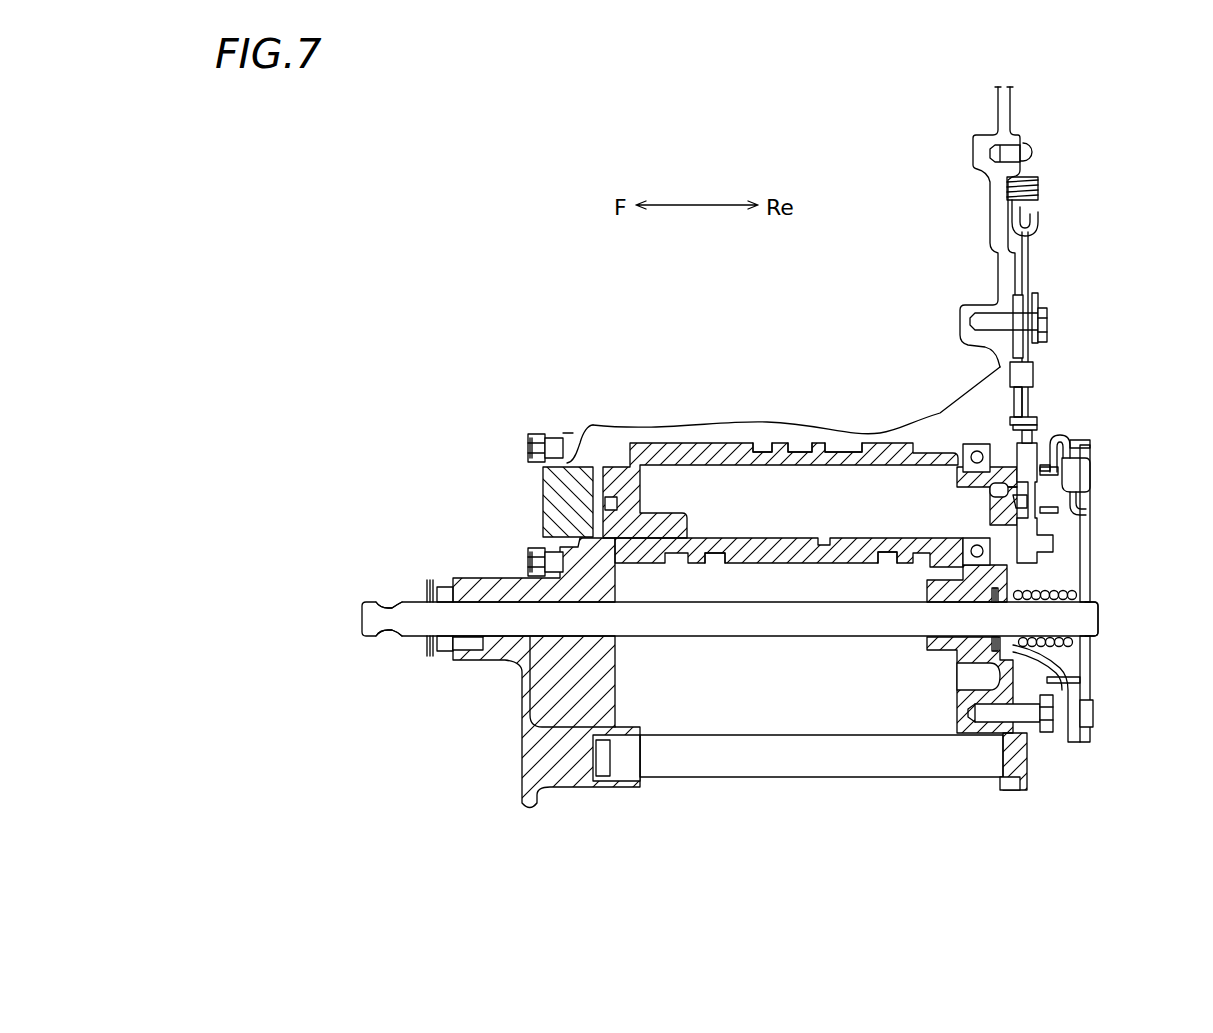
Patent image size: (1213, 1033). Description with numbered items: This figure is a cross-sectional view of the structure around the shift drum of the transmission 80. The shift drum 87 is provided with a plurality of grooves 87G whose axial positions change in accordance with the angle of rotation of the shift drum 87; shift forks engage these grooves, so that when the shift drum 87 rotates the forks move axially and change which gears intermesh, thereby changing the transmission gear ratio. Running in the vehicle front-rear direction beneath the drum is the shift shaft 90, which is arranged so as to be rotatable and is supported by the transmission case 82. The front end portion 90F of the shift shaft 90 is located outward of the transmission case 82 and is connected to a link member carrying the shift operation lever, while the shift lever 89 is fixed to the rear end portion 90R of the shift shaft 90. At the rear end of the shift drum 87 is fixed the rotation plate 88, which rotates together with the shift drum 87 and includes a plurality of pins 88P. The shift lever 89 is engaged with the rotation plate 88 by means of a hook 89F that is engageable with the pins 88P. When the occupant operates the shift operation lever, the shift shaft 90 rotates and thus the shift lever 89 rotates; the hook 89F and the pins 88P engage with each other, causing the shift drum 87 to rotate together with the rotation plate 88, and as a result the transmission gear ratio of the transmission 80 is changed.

The transmission 80 is at (501, 453).
The transmission case 82 is at (511, 767).
The shift drum 87 is at (619, 456).
The grooves 87G is at (800, 452).
The rotation plate 88 is at (1022, 571).
The pins 88P is at (1058, 470).
The shift lever 89 is at (1102, 578).
The hook 89F is at (1050, 438).
The shift shaft 90 is at (532, 622).
The front end portion 90F is at (372, 621).
The rear end portion 90R is at (1087, 619).